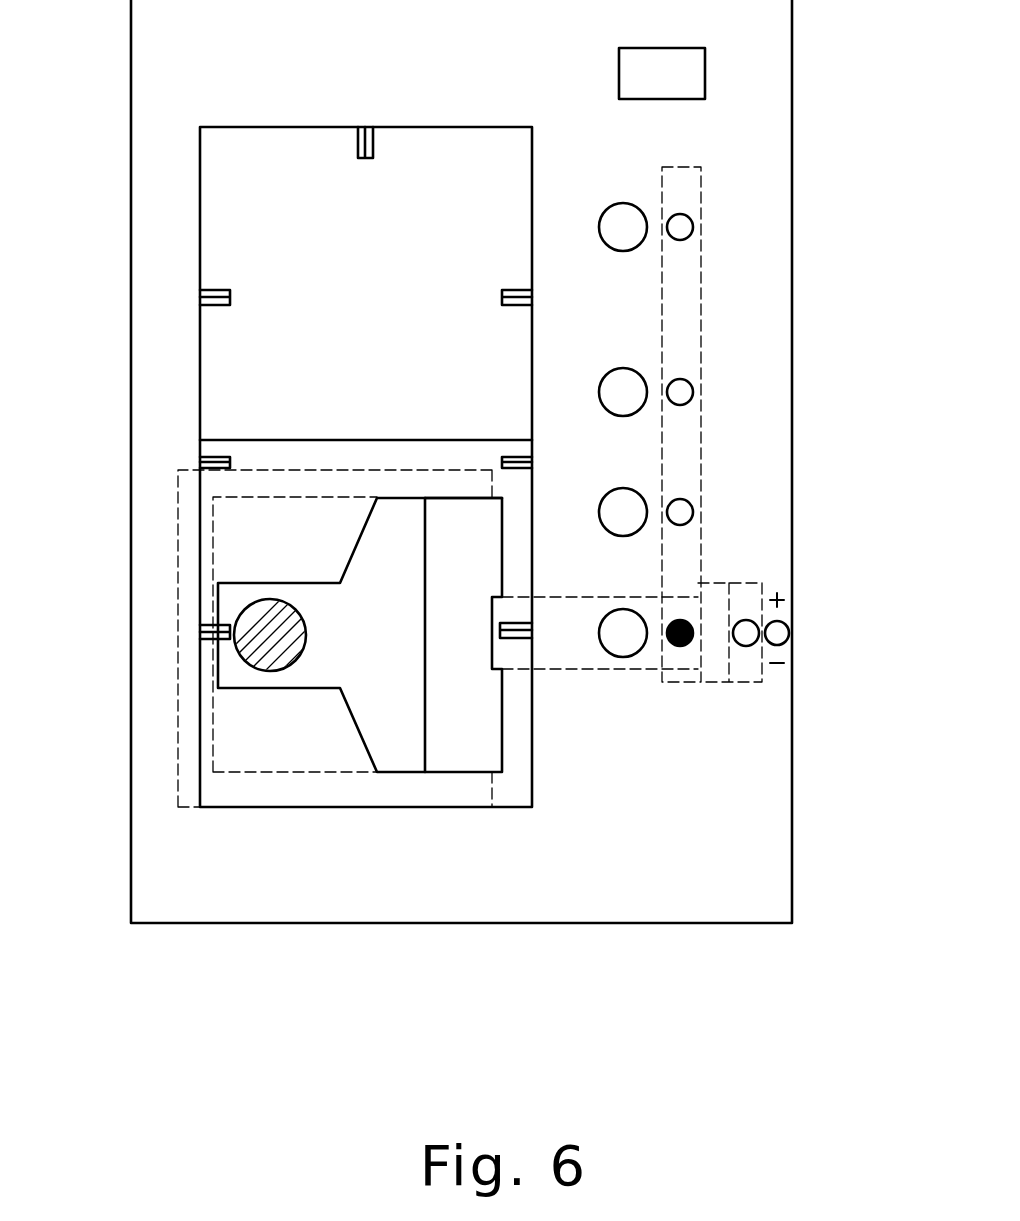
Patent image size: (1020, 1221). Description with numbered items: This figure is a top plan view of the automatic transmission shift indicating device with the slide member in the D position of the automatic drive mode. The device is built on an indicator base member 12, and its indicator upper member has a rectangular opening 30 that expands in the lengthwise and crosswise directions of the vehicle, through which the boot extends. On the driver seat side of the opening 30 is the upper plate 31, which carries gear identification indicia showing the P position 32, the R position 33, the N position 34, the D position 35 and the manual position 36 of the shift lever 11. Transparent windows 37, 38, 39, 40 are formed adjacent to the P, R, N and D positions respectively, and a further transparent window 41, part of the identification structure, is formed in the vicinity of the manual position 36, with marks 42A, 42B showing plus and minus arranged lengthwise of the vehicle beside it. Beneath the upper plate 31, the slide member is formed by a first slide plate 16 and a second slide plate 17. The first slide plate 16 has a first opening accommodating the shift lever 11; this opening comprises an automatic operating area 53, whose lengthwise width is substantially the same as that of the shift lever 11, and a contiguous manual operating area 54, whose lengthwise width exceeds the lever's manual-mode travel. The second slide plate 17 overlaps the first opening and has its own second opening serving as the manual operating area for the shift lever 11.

The shift lever 11 is at (237, 628).
The indicator base member 12 is at (333, 925).
The first slide plate 16 is at (300, 750).
The second slide plate 17 is at (453, 608).
The opening 30 is at (295, 128).
The upper plate 31 is at (693, 860).
The P position 32 is at (603, 213).
The R position 33 is at (603, 378).
The N position 34 is at (603, 500).
The D position 35 is at (308, 496).
The manual position 36 is at (792, 633).
The transparent window 37 is at (700, 225).
The transparent window 38 is at (698, 390).
The transparent window 39 is at (698, 510).
The transparent window 40 is at (690, 620).
The transparent window 41 is at (746, 650).
The mark 42A is at (784, 598).
The mark 42B is at (775, 670).
The automatic operating area 53 is at (322, 584).
The manual operating area 54 is at (465, 498).